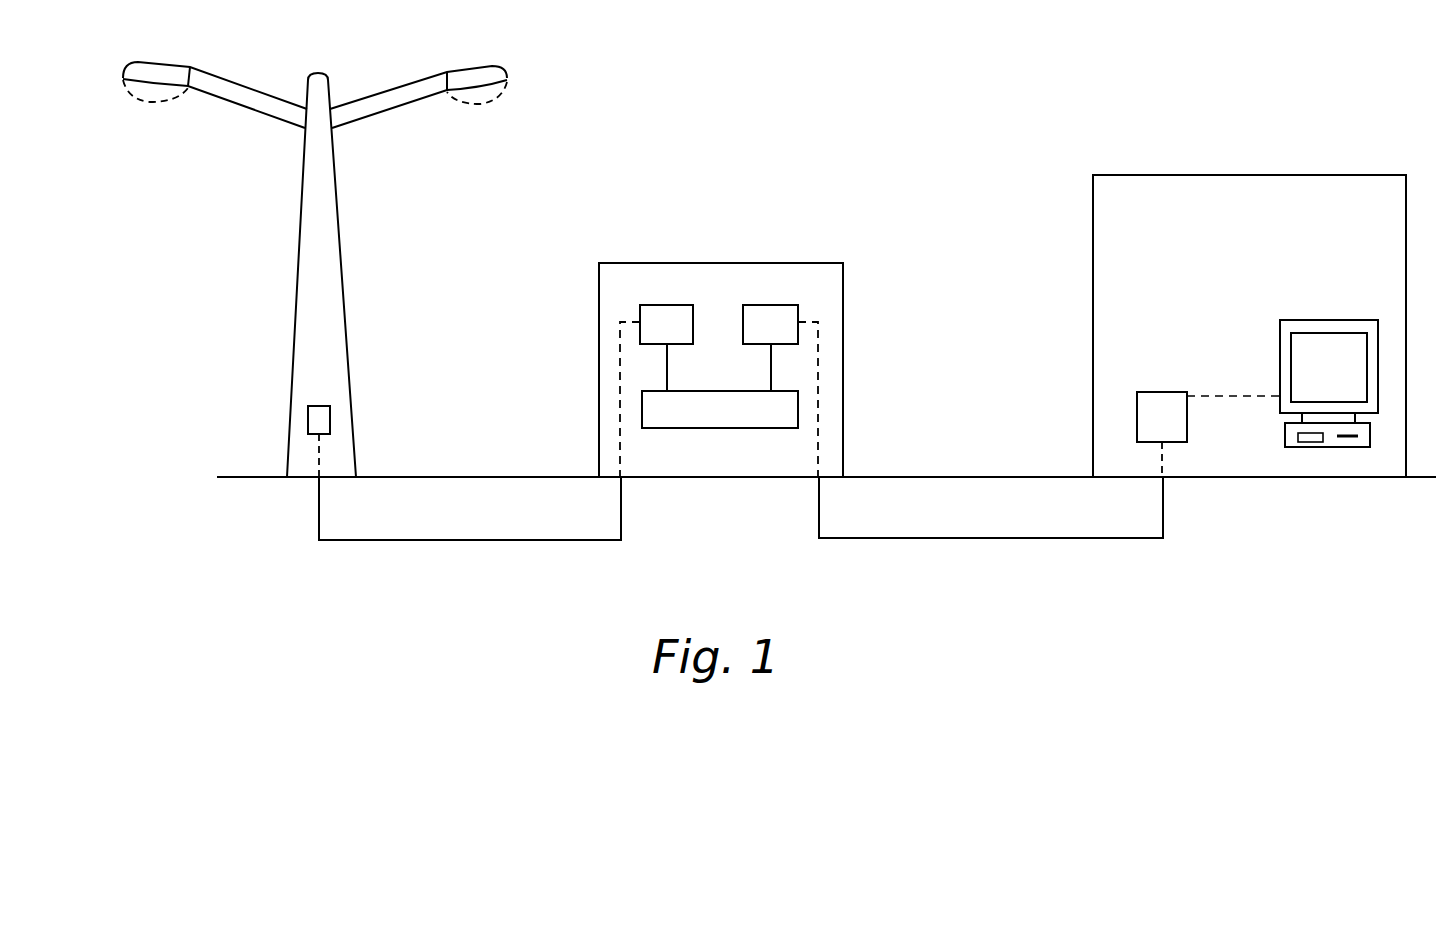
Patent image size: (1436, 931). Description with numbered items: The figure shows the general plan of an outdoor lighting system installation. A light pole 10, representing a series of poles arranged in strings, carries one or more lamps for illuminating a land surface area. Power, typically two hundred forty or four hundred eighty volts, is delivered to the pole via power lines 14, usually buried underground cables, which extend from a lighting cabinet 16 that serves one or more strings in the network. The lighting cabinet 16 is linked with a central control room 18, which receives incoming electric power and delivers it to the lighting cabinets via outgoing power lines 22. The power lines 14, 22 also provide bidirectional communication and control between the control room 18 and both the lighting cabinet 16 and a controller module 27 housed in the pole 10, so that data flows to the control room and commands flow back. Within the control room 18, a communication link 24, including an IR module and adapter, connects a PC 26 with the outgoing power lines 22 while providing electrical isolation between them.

The light pole 10 is at (338, 256).
The power line 14 is at (433, 540).
The lighting cabinet 16 is at (843, 335).
The central control room 18 is at (1093, 292).
The outgoing power line 22 is at (1000, 538).
The communication link 24 is at (1177, 381).
The PC 26 is at (1326, 320).
The controller module 27 is at (330, 412).